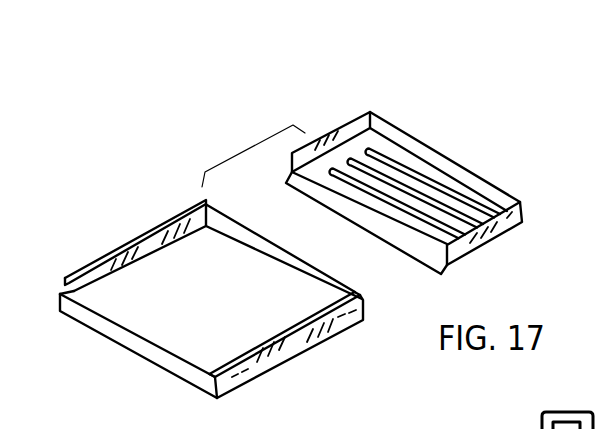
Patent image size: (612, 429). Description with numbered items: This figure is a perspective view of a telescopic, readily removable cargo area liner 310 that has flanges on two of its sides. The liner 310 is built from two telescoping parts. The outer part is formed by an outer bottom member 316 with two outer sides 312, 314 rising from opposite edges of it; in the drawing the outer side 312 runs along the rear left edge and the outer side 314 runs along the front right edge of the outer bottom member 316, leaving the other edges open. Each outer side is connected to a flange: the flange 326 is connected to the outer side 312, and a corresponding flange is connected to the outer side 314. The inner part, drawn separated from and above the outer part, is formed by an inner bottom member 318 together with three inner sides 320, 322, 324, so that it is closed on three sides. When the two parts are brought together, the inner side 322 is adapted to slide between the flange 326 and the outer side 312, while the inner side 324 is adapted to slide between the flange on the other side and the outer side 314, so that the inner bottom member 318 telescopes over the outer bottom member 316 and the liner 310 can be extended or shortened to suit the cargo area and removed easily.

The telescopic readily removable cargo area liner 310 is at (440, 93).
The outer side 312 is at (194, 206).
The outer side 314 is at (364, 310).
The outer bottom member 316 is at (209, 250).
The inner bottom member 318 is at (331, 177).
The inner side 320 is at (482, 179).
The inner side 322 is at (334, 133).
The inner side 324 is at (523, 212).
The flange 326 is at (121, 249).